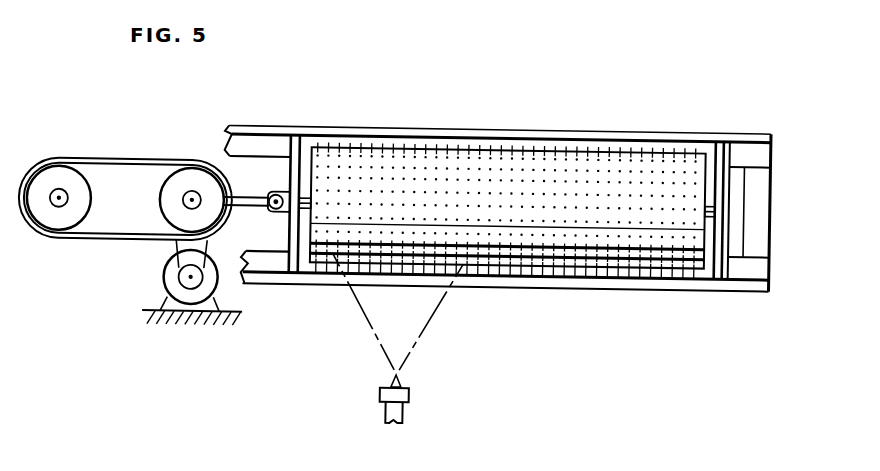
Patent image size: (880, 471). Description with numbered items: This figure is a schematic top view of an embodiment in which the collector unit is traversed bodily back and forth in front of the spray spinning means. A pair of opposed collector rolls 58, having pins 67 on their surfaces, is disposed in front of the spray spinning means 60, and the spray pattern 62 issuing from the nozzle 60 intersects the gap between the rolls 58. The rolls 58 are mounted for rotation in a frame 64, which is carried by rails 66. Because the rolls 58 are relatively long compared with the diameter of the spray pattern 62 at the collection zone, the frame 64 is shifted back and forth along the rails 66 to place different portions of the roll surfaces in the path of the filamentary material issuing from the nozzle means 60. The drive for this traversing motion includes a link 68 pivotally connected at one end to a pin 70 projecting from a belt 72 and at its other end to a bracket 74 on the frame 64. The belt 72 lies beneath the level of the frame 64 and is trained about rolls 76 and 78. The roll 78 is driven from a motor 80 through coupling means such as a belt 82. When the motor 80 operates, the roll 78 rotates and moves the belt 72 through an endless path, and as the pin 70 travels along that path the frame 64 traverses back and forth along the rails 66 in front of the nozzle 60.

The collector rolls 58 is at (600, 166).
The spray spinning means 60 is at (413, 392).
The spray pattern 62 is at (430, 325).
The frame 64 is at (722, 189).
The rails 66 is at (268, 147).
The pins 67 is at (433, 145).
The link 68 is at (262, 206).
The pin 70 is at (234, 197).
The belt 72 is at (93, 244).
The bracket 74 is at (280, 189).
The roll 76 is at (50, 221).
The roll 78 is at (182, 184).
The motor 80 is at (180, 313).
The belt 82 is at (173, 251).